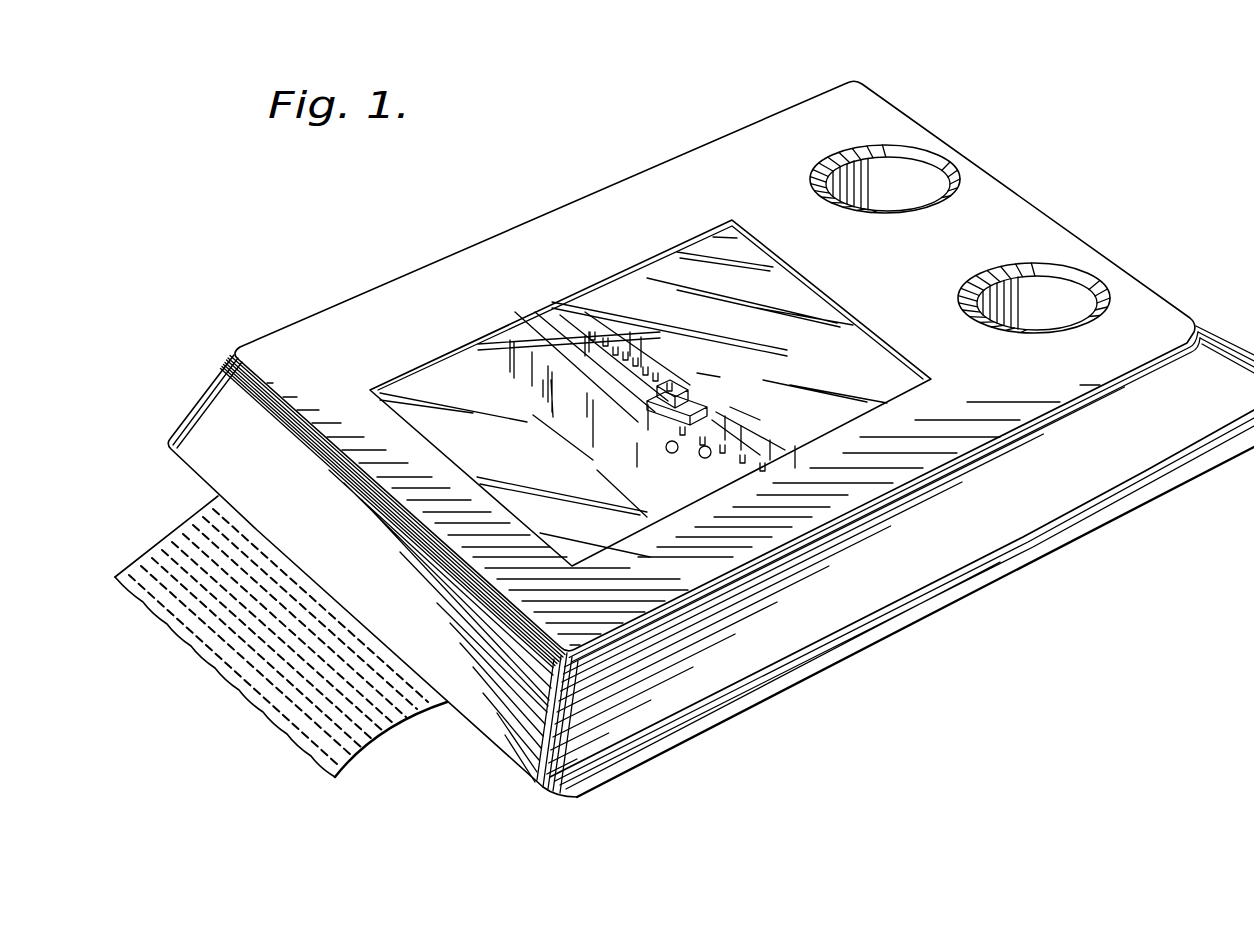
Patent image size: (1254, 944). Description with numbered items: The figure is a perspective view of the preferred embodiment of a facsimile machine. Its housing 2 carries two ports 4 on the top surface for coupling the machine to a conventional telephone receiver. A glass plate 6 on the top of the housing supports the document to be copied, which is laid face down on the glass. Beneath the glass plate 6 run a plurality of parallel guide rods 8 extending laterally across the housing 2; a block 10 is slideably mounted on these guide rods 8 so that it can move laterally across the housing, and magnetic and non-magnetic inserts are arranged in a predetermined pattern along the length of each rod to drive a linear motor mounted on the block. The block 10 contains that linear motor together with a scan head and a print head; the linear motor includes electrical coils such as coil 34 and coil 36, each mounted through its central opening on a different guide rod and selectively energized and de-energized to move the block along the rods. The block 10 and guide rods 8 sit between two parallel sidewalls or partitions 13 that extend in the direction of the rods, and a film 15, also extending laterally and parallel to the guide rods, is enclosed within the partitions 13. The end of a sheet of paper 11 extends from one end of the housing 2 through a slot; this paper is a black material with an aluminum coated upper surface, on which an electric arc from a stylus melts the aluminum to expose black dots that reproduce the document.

The housing 2 is at (1043, 484).
The ports 4 is at (943, 189).
The glass plate 6 is at (740, 325).
The guide rods 8 is at (538, 338).
The block 10 is at (709, 391).
The sheet of paper 11 is at (163, 542).
The partitions 13 is at (526, 378).
The film 15 is at (583, 317).
The electrical coil 34 is at (667, 447).
The electrical coil 36 is at (700, 463).